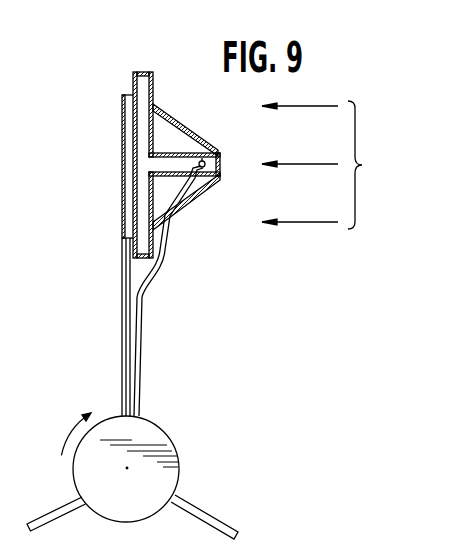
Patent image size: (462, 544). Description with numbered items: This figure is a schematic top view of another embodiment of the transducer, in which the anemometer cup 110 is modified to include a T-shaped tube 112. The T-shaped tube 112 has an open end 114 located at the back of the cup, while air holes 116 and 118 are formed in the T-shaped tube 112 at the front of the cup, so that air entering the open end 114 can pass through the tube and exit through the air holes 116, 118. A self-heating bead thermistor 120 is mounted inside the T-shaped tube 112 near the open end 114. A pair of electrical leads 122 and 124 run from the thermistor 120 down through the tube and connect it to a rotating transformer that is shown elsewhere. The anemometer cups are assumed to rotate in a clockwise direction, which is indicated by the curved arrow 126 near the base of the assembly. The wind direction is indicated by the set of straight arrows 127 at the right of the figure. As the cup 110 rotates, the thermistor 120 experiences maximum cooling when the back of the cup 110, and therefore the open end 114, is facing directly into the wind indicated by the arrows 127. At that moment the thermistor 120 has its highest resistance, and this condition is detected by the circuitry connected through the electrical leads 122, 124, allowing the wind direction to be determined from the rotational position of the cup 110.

The anemometer cup 110 is at (176, 126).
The T-shaped tube 112 is at (153, 86).
The open end 114 is at (221, 167).
The air hole 116 is at (124, 241).
The air hole 118 is at (132, 78).
The self-heating bead thermistor 120 is at (208, 156).
The electrical lead 122 is at (139, 299).
The electrical lead 124 is at (142, 328).
The arrow 126 is at (63, 440).
The arrows 127 is at (320, 223).